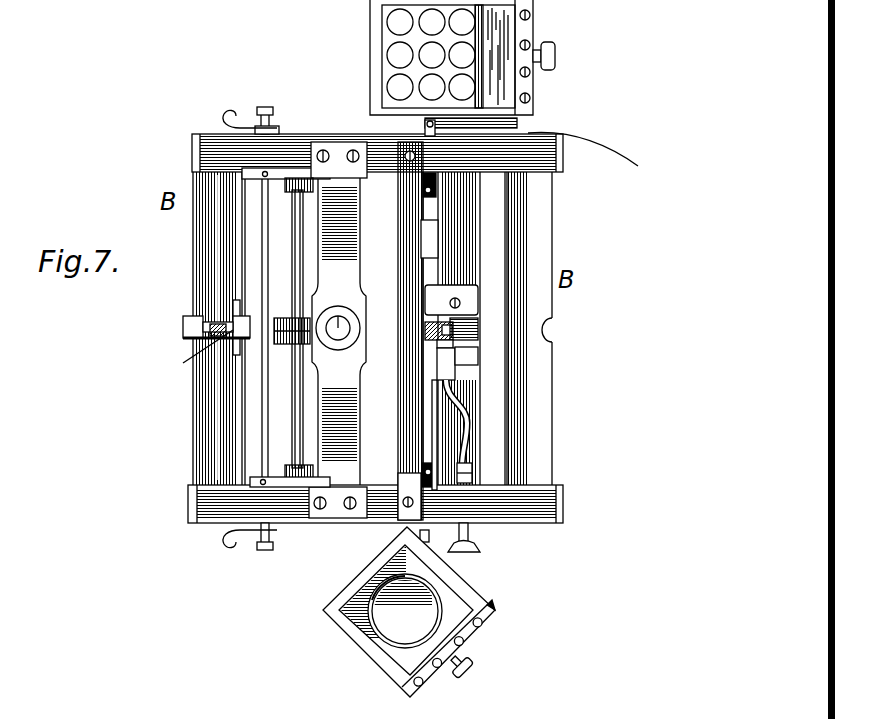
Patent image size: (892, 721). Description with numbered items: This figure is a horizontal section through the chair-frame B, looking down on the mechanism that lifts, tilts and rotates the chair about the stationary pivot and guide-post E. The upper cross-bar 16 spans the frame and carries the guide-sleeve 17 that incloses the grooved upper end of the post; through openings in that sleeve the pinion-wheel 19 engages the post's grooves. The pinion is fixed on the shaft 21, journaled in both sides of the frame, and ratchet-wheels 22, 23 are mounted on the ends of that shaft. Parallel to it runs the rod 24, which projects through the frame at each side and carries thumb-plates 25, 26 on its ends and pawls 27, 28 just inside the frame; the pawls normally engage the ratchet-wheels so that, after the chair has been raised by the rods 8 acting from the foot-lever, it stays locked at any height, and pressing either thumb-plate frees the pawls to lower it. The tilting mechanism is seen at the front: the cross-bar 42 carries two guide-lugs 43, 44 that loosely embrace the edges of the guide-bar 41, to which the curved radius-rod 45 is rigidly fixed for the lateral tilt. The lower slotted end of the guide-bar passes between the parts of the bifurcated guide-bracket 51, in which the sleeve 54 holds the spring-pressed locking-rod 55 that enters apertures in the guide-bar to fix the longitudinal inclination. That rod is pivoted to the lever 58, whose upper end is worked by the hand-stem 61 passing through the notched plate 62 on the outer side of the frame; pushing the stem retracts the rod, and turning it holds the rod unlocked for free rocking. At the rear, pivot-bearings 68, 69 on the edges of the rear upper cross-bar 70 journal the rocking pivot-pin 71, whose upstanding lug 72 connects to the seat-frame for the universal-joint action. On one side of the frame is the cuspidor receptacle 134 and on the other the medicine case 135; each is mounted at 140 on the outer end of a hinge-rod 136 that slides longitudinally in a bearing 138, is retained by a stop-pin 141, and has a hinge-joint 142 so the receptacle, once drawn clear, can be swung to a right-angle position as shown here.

The rods 8 is at (450, 221).
The second cross-bar 16 is at (339, 331).
The guide-sleeve 17 is at (344, 348).
The pinion-wheel 19 is at (298, 350).
The shaft 21 is at (304, 402).
The ratchet-wheel 22 is at (326, 168).
The ratchet-wheel 23 is at (308, 470).
The rod 24 is at (262, 442).
The thumb-plate 25 is at (263, 96).
The thumb-plate 26 is at (258, 538).
The pawl 27 is at (281, 178).
The pawl 28 is at (282, 486).
The guide-bar 41 is at (425, 330).
The cross-bar 42 is at (410, 276).
The guide-lug 43 is at (437, 313).
The guide-lug 44 is at (436, 348).
The curved radius-rod 45 is at (437, 430).
The bifurcated guide-bracket 51 is at (470, 320).
The sleeve 54 is at (463, 368).
The locking-rod 55 is at (530, 415).
The lever 58 is at (473, 473).
The hand-stem 61 is at (460, 585).
The plate 62 is at (467, 523).
The pivot-bearing 68 is at (185, 326).
The pivot-bearing 69 is at (193, 354).
The rear upper cross-bar 70 is at (217, 328).
The rocking pivot-pin 71 is at (226, 328).
The lug 72 is at (233, 368).
The cuspidor receptacle 134 is at (387, 573).
The medicine case 135 is at (413, 43).
The hinge-rod 136 is at (510, 126).
The bearing 138 is at (437, 173).
The receptacle mounting 140 is at (508, 618).
The stop-pin 141 is at (425, 190).
The hinge-joint 142 is at (425, 123).